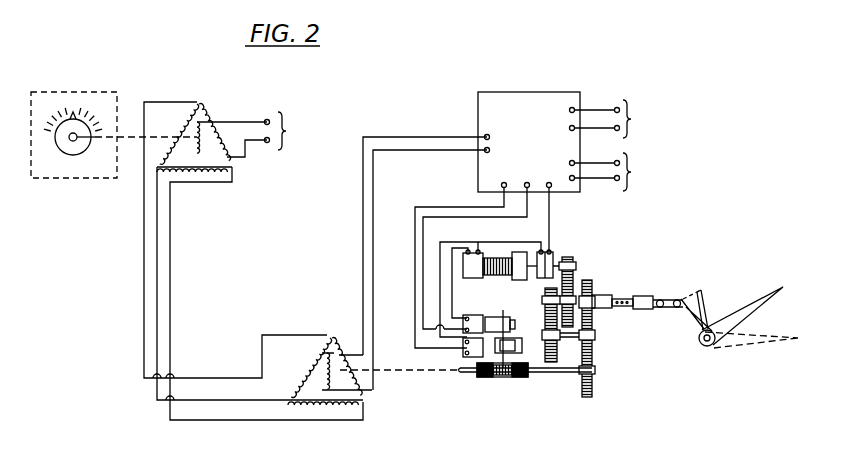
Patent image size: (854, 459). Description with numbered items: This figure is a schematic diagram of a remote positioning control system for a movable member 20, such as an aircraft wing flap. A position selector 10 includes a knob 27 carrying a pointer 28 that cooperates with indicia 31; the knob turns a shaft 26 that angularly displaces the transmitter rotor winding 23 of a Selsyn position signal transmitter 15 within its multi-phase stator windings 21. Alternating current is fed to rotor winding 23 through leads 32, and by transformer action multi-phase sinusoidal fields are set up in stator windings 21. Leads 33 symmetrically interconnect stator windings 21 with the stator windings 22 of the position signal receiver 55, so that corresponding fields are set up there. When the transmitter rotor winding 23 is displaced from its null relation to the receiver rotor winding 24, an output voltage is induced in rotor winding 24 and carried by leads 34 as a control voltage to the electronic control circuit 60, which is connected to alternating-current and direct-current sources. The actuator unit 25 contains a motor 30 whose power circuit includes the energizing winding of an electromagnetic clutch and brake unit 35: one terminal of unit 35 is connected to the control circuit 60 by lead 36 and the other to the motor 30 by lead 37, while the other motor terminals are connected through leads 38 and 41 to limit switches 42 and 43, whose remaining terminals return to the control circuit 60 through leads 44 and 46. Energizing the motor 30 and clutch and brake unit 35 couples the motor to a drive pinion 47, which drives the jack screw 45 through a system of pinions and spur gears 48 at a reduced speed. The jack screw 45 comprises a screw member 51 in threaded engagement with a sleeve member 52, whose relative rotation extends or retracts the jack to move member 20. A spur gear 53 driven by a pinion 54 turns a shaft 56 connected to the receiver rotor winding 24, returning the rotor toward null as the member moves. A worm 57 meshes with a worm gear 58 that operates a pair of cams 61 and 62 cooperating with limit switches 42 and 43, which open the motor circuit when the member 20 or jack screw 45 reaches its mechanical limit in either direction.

The position selector 10 is at (74, 137).
The position signal transmitter 15 is at (236, 147).
The movable member 20 is at (740, 309).
The multi-phase stator windings 21 is at (201, 107).
The multi-phase stator windings 22 is at (322, 358).
The transmitter rotor winding 23 is at (197, 153).
The receiver rotor winding 24 is at (322, 371).
The actuator unit 25 is at (560, 310).
The shaft 26 is at (146, 122).
The knob 27 is at (86, 148).
The pointer 28 is at (72, 111).
The motor 30 is at (503, 276).
The indicia 31 is at (92, 108).
The leads 32 is at (253, 140).
The leads 33 is at (169, 272).
The leads 34 is at (364, 181).
The electromagnetic clutch and brake unit 35 is at (554, 252).
The lead 36 is at (550, 210).
The lead 37 is at (516, 242).
The lead 38 is at (456, 284).
The lead 41 is at (449, 292).
The limit switch 42 is at (474, 314).
The limit switch 43 is at (470, 356).
The lead 44 is at (469, 216).
The jack screw 45 is at (605, 295).
The lead 46 is at (431, 206).
The drive pinion 47 is at (573, 258).
The gearing 48 is at (537, 355).
The screw member 51 is at (627, 298).
The sleeve member 52 is at (655, 296).
The spur gear 53 is at (595, 357).
The pinion 54 is at (595, 335).
The position signal receiver 55 is at (330, 447).
The shaft 56 is at (537, 374).
The worm 57 is at (505, 378).
The worm gear 58 is at (482, 378).
The electronic control circuit 60 is at (553, 92).
The cam 61 is at (504, 310).
The cam 62 is at (512, 340).